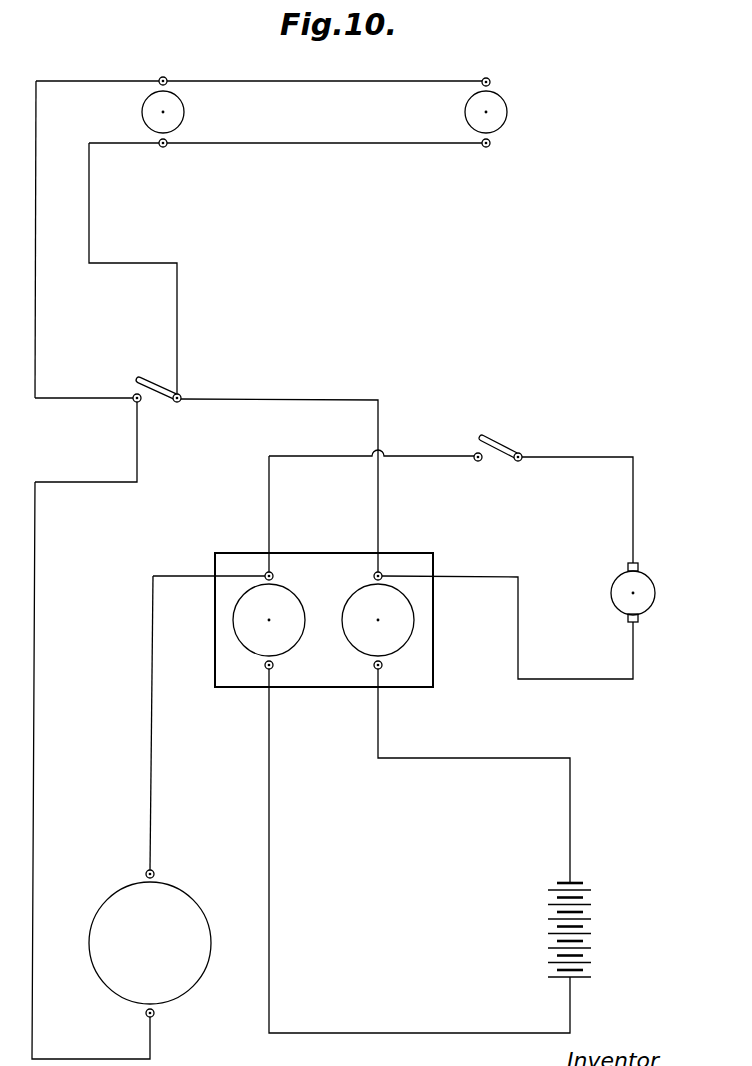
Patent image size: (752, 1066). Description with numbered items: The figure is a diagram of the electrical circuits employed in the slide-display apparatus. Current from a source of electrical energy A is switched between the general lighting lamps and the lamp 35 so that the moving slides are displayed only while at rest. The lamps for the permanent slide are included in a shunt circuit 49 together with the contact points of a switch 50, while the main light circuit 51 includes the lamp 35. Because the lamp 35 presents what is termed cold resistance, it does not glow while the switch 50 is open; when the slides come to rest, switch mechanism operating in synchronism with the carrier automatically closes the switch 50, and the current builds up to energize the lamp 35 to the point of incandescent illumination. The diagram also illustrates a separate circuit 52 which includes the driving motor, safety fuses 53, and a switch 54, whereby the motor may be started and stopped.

The shunt circuit 49 is at (271, 237).
The switch 50 is at (158, 386).
The main light circuit 51 is at (150, 742).
The circuit 52 is at (377, 738).
The safety fuses 53 is at (324, 620).
The switch 54 is at (503, 437).
The lamp 35 is at (150, 943).
The source of electrical energy A is at (588, 938).